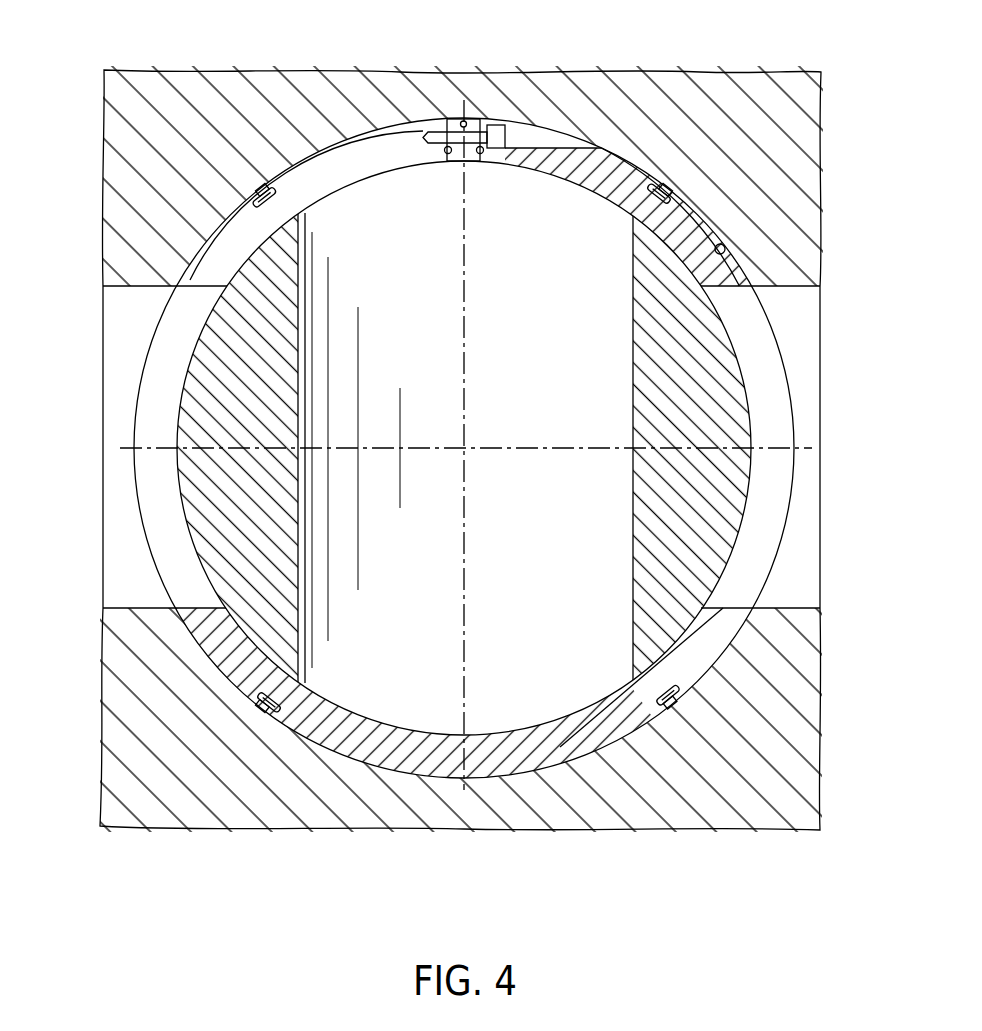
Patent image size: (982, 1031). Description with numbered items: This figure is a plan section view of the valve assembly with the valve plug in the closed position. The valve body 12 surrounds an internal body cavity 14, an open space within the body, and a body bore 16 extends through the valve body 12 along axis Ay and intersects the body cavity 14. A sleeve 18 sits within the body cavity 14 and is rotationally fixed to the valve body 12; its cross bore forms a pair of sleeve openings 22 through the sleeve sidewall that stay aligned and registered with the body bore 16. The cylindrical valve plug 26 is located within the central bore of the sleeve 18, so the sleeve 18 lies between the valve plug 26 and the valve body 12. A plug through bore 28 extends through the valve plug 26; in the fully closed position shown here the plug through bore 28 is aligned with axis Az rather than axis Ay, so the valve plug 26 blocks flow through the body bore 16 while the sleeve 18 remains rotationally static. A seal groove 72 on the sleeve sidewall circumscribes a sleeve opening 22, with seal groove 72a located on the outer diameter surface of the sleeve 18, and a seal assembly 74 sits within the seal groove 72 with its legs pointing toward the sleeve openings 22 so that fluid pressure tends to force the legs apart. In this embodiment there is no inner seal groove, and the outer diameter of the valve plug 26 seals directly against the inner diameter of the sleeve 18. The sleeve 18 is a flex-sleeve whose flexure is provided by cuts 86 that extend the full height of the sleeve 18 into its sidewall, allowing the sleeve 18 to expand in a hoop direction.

The valve body 12 is at (790, 683).
The internal body cavity 14 is at (733, 253).
The body bore 16 is at (140, 608).
The sleeve 18 is at (770, 525).
The sleeve openings 22 is at (225, 286).
The valve plug 26 is at (714, 409).
The plug through bore 28 is at (560, 205).
The seal groove 72 is at (688, 708).
The seal groove 72a is at (676, 197).
The seal assembly 74 is at (258, 724).
The cuts 86 is at (438, 118).
The axis Az is at (466, 318).
The axis Ay is at (530, 450).